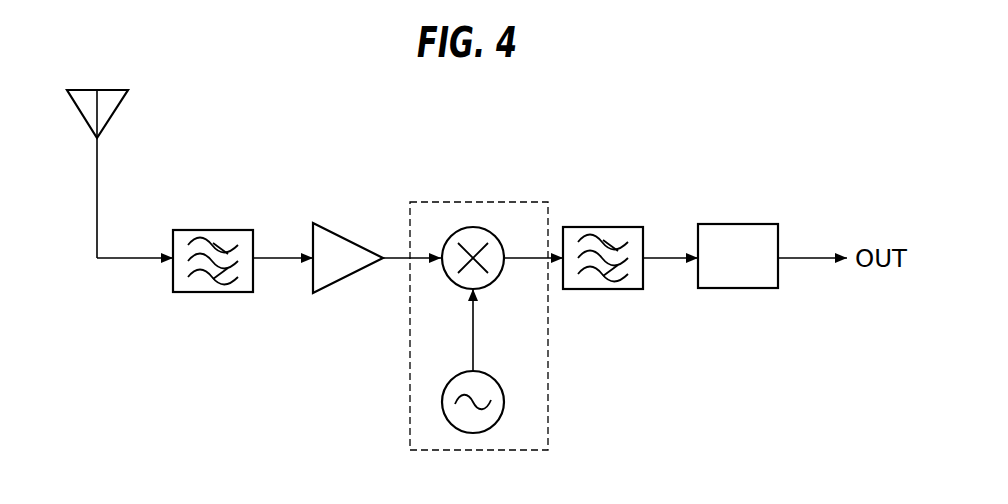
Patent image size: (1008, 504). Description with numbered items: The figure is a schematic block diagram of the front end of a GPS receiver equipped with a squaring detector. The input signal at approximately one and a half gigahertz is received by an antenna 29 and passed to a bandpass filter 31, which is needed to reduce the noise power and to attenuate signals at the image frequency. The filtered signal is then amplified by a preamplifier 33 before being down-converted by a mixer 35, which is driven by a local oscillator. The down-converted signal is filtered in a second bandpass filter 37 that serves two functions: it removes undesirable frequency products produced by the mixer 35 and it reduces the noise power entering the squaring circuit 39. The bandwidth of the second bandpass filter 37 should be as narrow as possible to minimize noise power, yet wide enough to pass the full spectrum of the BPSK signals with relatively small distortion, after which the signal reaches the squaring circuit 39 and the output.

The antenna 29 is at (97, 138).
The bandpass filter 31 is at (203, 292).
The preamplifier 33 is at (340, 280).
The mixer 35 is at (550, 399).
The second bandpass filter 37 is at (593, 289).
The squaring circuit 39 is at (728, 288).